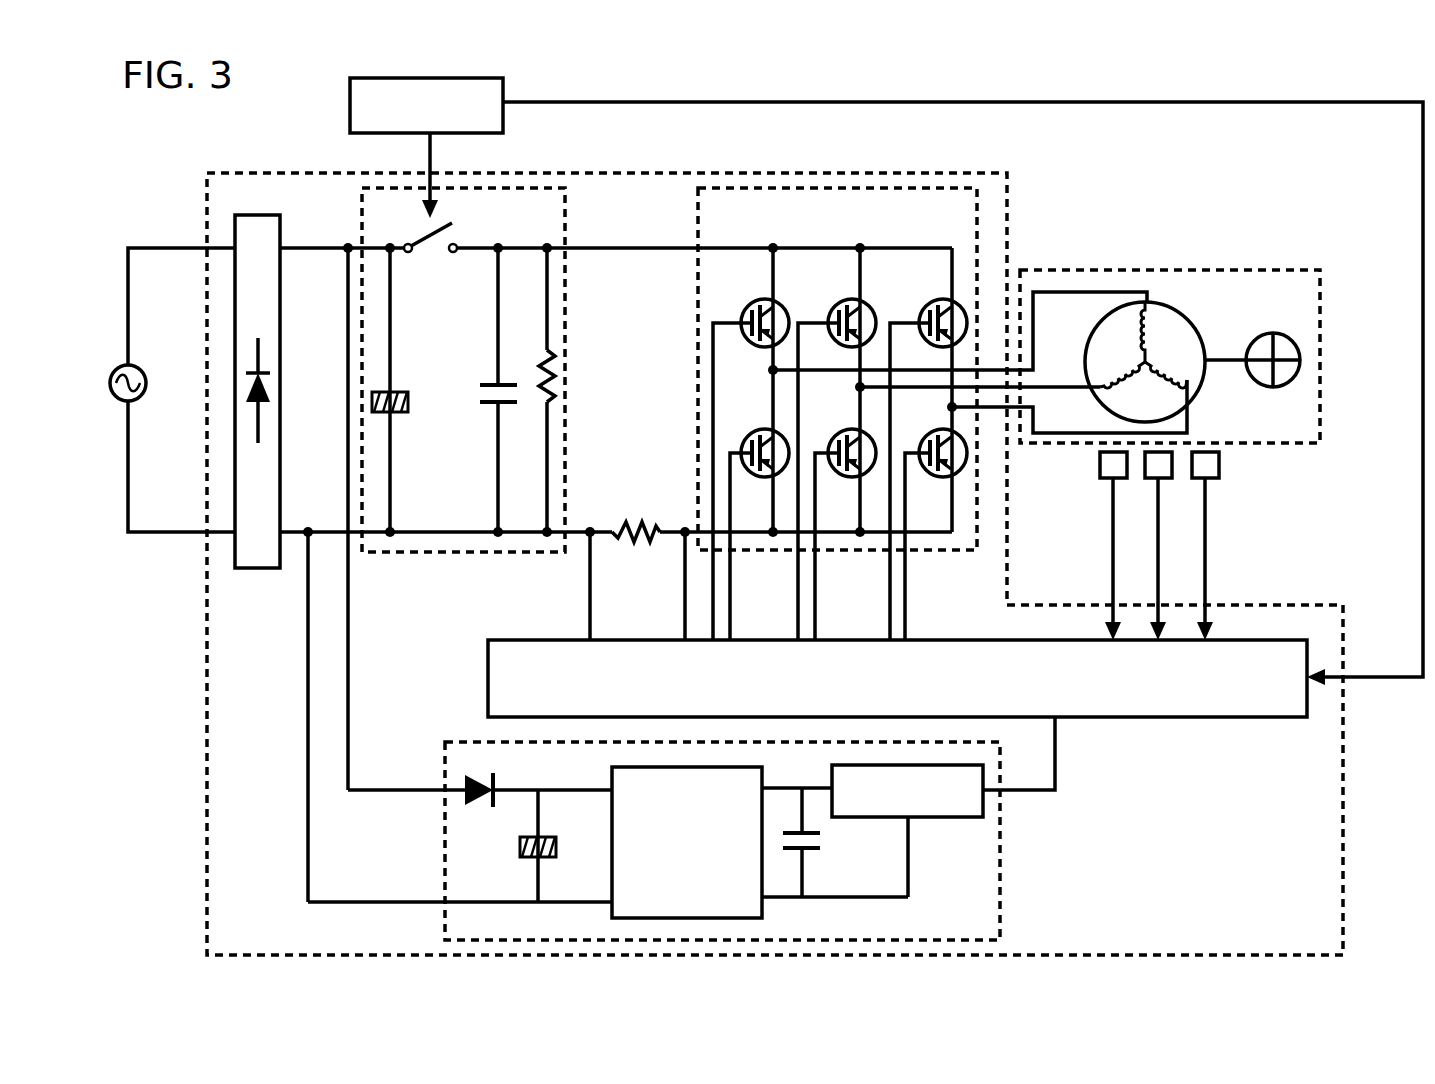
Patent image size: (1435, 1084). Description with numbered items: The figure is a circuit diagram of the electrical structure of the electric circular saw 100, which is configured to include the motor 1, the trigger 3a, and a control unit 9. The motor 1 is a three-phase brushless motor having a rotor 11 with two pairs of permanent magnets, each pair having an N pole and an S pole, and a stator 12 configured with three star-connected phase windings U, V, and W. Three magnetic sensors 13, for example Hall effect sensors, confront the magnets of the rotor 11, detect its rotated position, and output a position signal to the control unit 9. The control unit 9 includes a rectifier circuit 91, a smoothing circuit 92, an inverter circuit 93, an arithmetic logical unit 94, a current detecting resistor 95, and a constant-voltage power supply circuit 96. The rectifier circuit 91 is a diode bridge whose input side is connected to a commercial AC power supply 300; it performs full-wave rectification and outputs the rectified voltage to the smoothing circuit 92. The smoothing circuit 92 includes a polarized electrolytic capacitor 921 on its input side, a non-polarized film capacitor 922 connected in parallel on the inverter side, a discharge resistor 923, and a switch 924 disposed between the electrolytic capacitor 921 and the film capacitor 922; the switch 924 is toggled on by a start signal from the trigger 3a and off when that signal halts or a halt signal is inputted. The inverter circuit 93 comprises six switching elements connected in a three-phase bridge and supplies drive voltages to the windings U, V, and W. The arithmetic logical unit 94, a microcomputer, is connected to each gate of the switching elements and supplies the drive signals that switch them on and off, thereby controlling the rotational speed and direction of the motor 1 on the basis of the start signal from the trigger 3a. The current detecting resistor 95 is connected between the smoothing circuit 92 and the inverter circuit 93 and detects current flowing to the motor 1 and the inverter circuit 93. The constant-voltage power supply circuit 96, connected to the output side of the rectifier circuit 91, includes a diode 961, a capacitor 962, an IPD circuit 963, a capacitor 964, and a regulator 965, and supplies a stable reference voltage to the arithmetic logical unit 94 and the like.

The electric circular saw 100 is at (1310, 66).
The trigger 3a is at (503, 110).
The control unit 9 is at (1345, 912).
The commercial AC power supply 300 is at (140, 395).
The rectifier circuit 91 is at (280, 316).
The smoothing circuit 92 is at (567, 471).
The electrolytic capacitor 921 is at (408, 405).
The film capacitor 922 is at (484, 385).
The discharge resistor 923 is at (556, 370).
The switch 924 is at (485, 221).
The inverter circuit 93 is at (698, 276).
The arithmetic logical unit 94 is at (1190, 718).
The current detecting resistor 95 is at (634, 520).
The constant-voltage power supply circuit 96 is at (1003, 906).
The diode 961 is at (488, 802).
The capacitor 962 is at (522, 849).
The IPD circuit 963 is at (762, 786).
The capacitor 964 is at (822, 841).
The regulator 965 is at (933, 818).
The motor 1 is at (1297, 266).
The rotor 11 is at (1276, 336).
The stator 12 is at (1192, 320).
The magnetic sensors 13 is at (1118, 480).